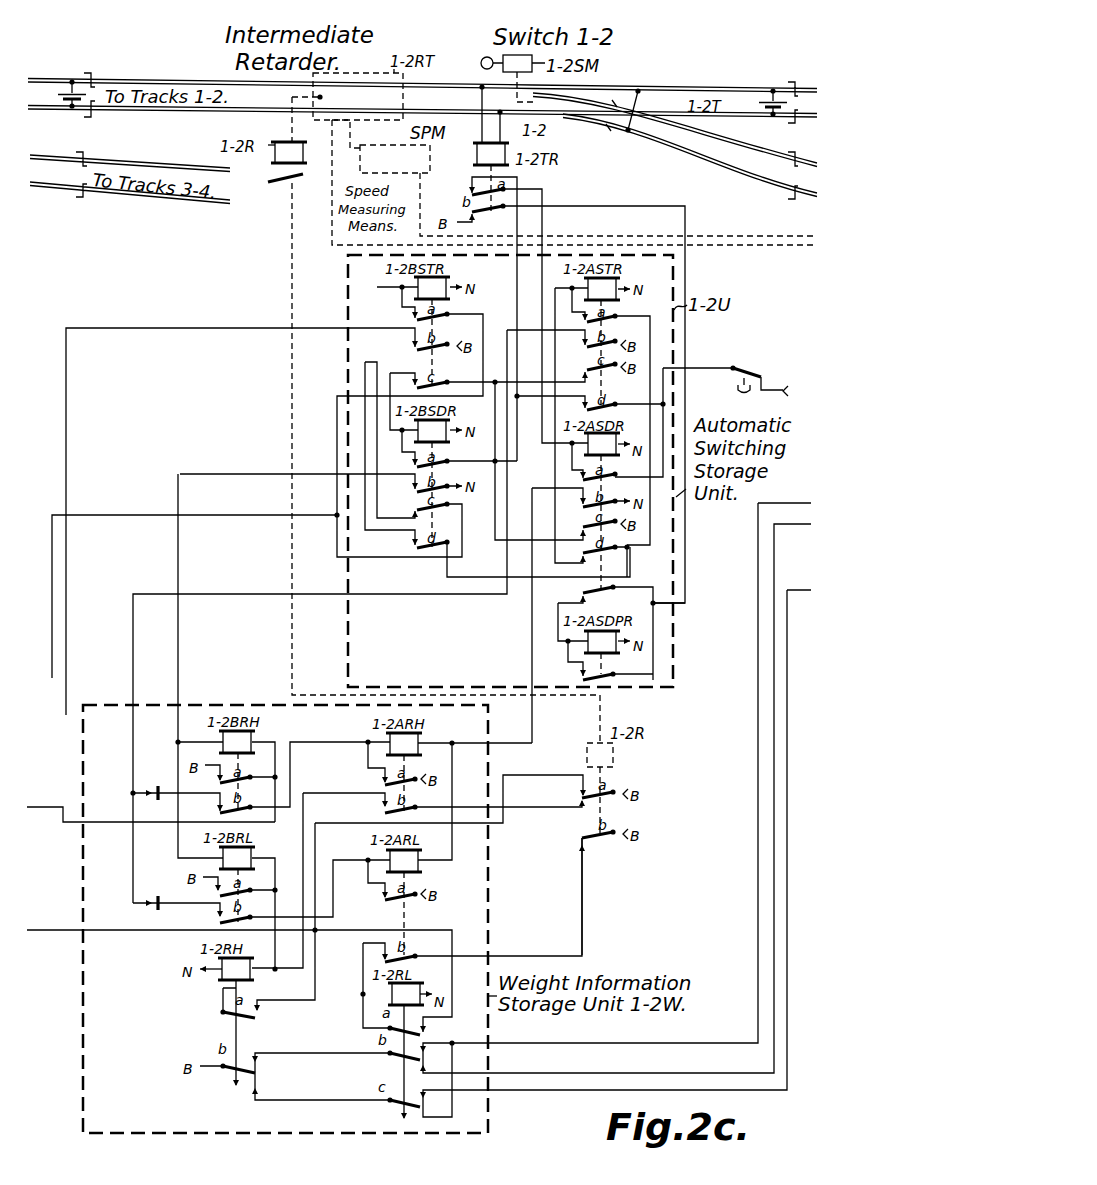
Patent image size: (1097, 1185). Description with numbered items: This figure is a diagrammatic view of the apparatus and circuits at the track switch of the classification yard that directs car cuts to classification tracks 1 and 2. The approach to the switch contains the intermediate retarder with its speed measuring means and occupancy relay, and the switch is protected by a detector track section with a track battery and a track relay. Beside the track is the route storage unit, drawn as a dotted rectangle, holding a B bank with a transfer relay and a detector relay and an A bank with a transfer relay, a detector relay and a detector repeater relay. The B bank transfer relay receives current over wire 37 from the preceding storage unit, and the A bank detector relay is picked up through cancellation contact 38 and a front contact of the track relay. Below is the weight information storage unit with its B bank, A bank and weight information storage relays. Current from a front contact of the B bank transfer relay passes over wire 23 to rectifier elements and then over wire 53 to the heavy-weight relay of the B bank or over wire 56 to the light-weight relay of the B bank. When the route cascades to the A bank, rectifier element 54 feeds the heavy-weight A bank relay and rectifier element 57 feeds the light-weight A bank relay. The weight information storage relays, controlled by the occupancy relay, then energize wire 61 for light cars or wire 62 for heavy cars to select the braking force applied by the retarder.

The classification track 1 is at (675, 102).
The classification track 2 is at (675, 146).
The wire 23 is at (66, 715).
The wire 37 is at (52, 678).
The cancellation contact 38 is at (742, 361).
The wire 53 is at (151, 804).
The rectifier element 54 is at (160, 806).
The wire 56 is at (239, 971).
The rectifier element 57 is at (160, 908).
The wire 61 is at (616, 842).
The wire 62 is at (615, 788).